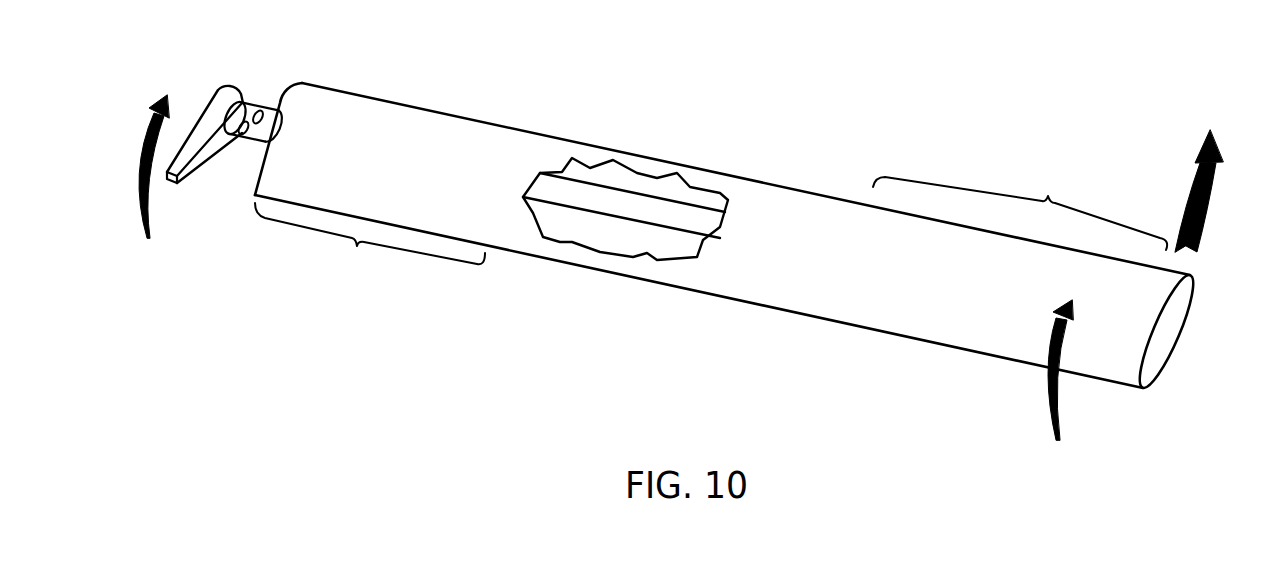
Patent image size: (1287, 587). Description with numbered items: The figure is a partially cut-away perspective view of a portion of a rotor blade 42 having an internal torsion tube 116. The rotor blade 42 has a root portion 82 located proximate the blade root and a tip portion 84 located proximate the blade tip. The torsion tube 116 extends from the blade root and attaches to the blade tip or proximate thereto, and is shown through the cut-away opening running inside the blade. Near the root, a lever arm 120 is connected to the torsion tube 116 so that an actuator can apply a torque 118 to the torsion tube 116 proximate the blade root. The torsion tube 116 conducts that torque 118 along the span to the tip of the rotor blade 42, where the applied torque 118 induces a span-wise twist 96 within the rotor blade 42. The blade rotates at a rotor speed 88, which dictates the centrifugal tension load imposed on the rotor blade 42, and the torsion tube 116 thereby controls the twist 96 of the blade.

The rotor blade 42 is at (504, 145).
The root portion 82 is at (357, 246).
The tip portion 84 is at (1048, 198).
The rotor speed 88 is at (1203, 217).
The twist 96 is at (1045, 397).
The torsion tube 116 is at (253, 138).
The torque 118 is at (142, 197).
The lever arm 120 is at (187, 140).